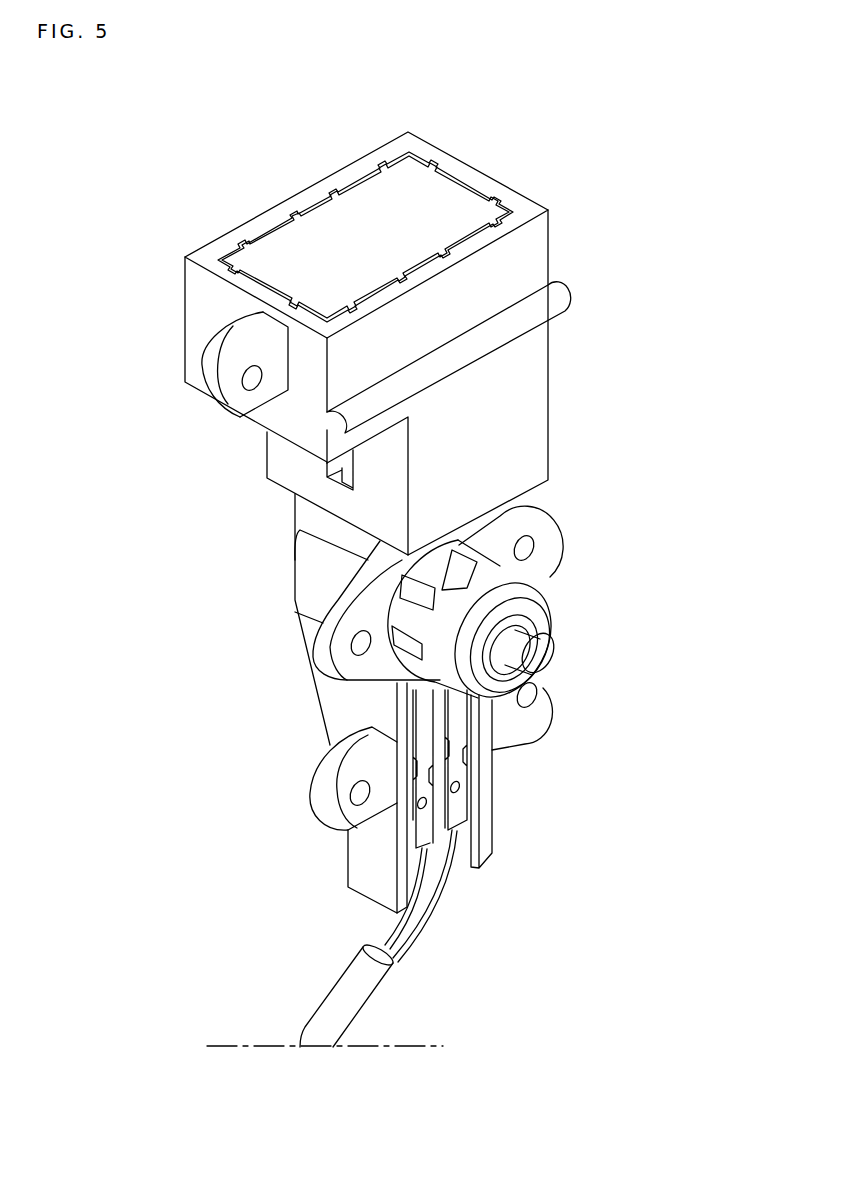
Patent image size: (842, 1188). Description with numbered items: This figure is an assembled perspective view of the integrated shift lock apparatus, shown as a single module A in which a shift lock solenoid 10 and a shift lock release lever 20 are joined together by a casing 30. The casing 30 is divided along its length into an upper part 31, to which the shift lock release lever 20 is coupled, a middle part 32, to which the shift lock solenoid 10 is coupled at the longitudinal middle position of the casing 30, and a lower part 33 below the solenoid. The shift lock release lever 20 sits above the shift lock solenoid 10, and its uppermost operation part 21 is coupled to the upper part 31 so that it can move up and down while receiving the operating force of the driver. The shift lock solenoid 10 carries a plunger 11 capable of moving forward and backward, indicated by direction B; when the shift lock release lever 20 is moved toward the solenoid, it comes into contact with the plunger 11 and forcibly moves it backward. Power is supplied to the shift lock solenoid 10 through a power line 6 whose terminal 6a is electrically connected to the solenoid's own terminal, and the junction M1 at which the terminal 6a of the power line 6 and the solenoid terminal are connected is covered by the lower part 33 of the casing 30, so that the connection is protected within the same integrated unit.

The drive module assembly A is at (481, 161).
The shift lock release lever 20 is at (367, 215).
The operation part 21 is at (293, 257).
The casing 30 is at (182, 332).
The upper part 31 is at (528, 418).
The middle part 32 is at (320, 582).
The lower part 33 is at (350, 701).
The shift lock solenoid 10 is at (500, 572).
The plunger 11 is at (530, 643).
The rotation direction B is at (560, 652).
The junction M1 is at (462, 720).
The terminal 6a is at (447, 795).
The power line 6 is at (345, 998).